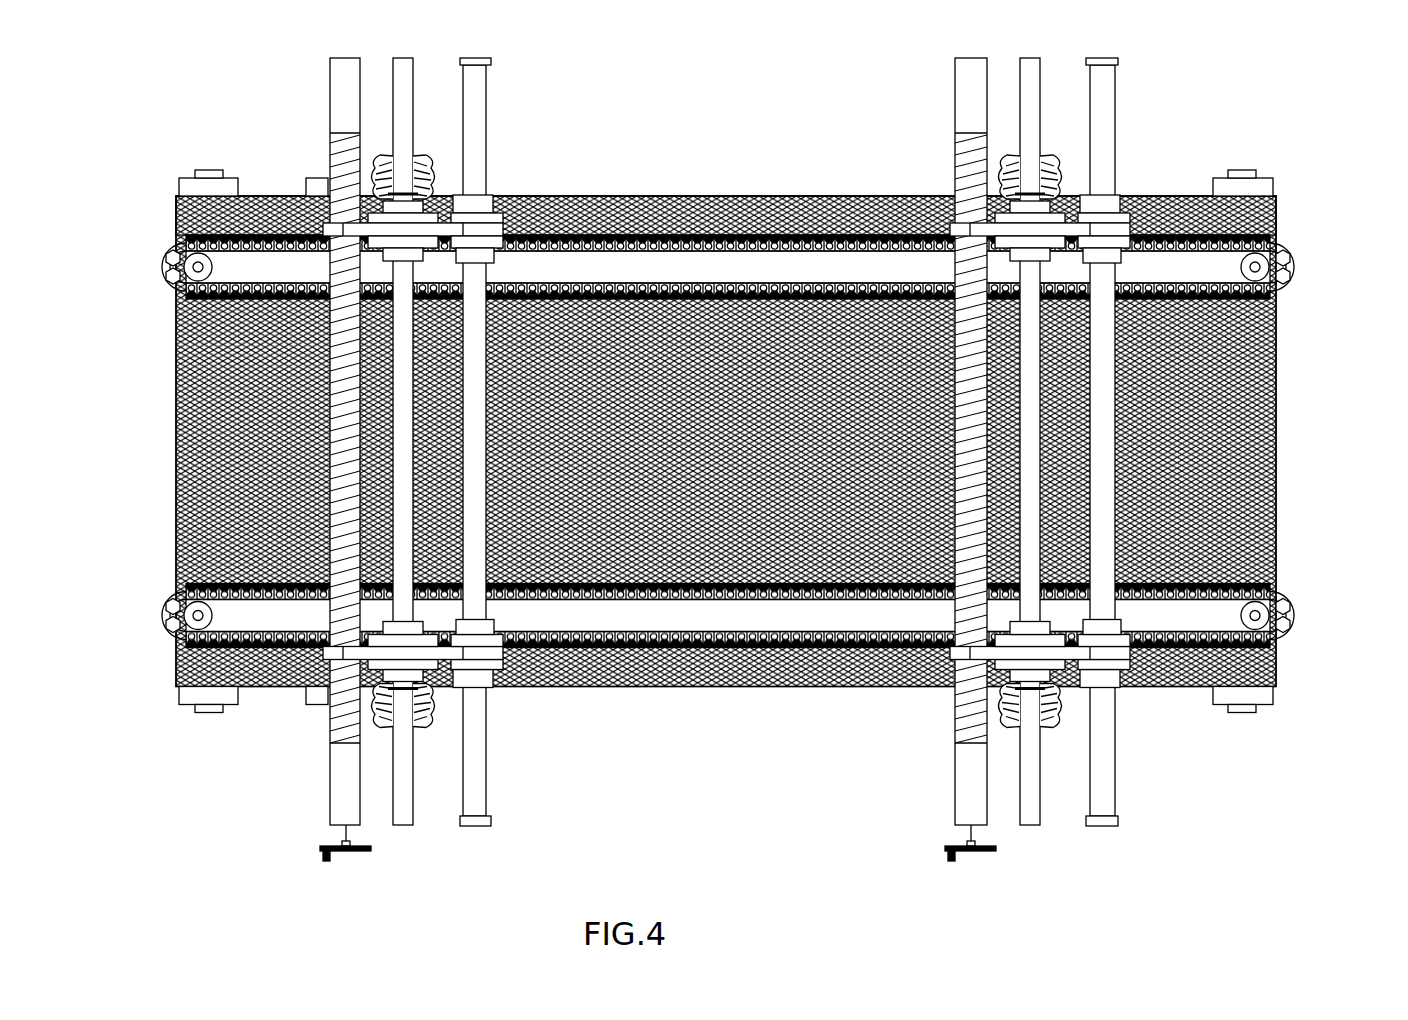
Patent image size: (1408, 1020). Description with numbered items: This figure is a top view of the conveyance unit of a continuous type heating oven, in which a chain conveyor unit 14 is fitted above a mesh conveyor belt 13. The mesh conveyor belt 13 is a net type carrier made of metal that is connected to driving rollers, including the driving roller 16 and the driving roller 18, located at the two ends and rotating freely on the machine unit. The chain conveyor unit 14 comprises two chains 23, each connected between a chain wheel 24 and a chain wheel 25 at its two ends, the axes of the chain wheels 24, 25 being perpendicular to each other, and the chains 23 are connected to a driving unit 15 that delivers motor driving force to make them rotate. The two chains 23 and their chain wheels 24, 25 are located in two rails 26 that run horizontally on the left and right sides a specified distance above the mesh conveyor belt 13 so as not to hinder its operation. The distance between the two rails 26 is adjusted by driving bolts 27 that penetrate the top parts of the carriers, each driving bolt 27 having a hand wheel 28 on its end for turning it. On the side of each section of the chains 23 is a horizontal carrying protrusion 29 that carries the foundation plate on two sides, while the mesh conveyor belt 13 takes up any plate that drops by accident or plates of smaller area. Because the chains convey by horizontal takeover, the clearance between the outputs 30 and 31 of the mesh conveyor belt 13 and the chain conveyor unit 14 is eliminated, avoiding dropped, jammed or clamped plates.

The mesh conveyor belt 13 is at (663, 330).
The chain conveyor unit 14 is at (882, 215).
The driving unit 15 is at (446, 719).
The driving roller 16 is at (222, 692).
The driving roller 18 is at (1233, 692).
The chain 23 is at (727, 232).
The chain wheel 24 is at (240, 236).
The chain wheel 25 is at (1270, 235).
The rail 26 is at (798, 262).
The driving bolt 27 is at (335, 760).
The hand wheel 28 is at (345, 845).
The carrying protrusion 29 is at (1165, 290).
The output 30 is at (1277, 410).
The output 31 is at (1283, 258).